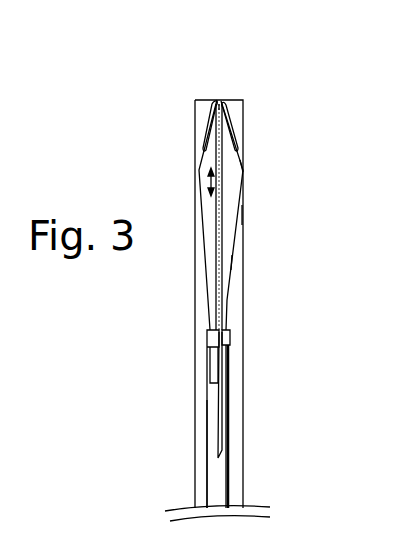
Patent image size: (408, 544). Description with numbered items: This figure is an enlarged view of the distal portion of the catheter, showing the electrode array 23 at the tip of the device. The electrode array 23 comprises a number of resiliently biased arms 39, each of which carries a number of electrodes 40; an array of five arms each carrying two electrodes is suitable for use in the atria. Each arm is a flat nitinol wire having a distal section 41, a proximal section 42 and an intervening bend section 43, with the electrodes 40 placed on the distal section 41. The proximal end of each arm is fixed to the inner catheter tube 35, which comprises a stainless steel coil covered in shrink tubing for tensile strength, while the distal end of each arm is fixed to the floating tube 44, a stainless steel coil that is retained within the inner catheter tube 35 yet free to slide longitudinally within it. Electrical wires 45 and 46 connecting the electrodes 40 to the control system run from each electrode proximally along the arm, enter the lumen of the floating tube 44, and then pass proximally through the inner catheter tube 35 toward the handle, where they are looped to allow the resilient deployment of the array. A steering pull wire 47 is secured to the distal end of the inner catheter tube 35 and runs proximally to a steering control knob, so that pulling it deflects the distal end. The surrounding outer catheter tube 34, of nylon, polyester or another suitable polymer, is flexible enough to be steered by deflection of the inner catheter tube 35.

The electrode array 23 is at (228, 98).
The outer catheter tube 34 is at (244, 440).
The inner catheter tube 35 is at (211, 487).
The resiliently biased arms 39 is at (205, 274).
The electrodes 40 is at (236, 120).
The distal section 41 is at (238, 136).
The proximal section 42 is at (242, 215).
The bend section 43 is at (245, 168).
The floating tube 44 is at (232, 262).
The electrical wire 45 is at (204, 135).
The electrical wire 46 is at (213, 108).
The steering pull wire 47 is at (230, 490).